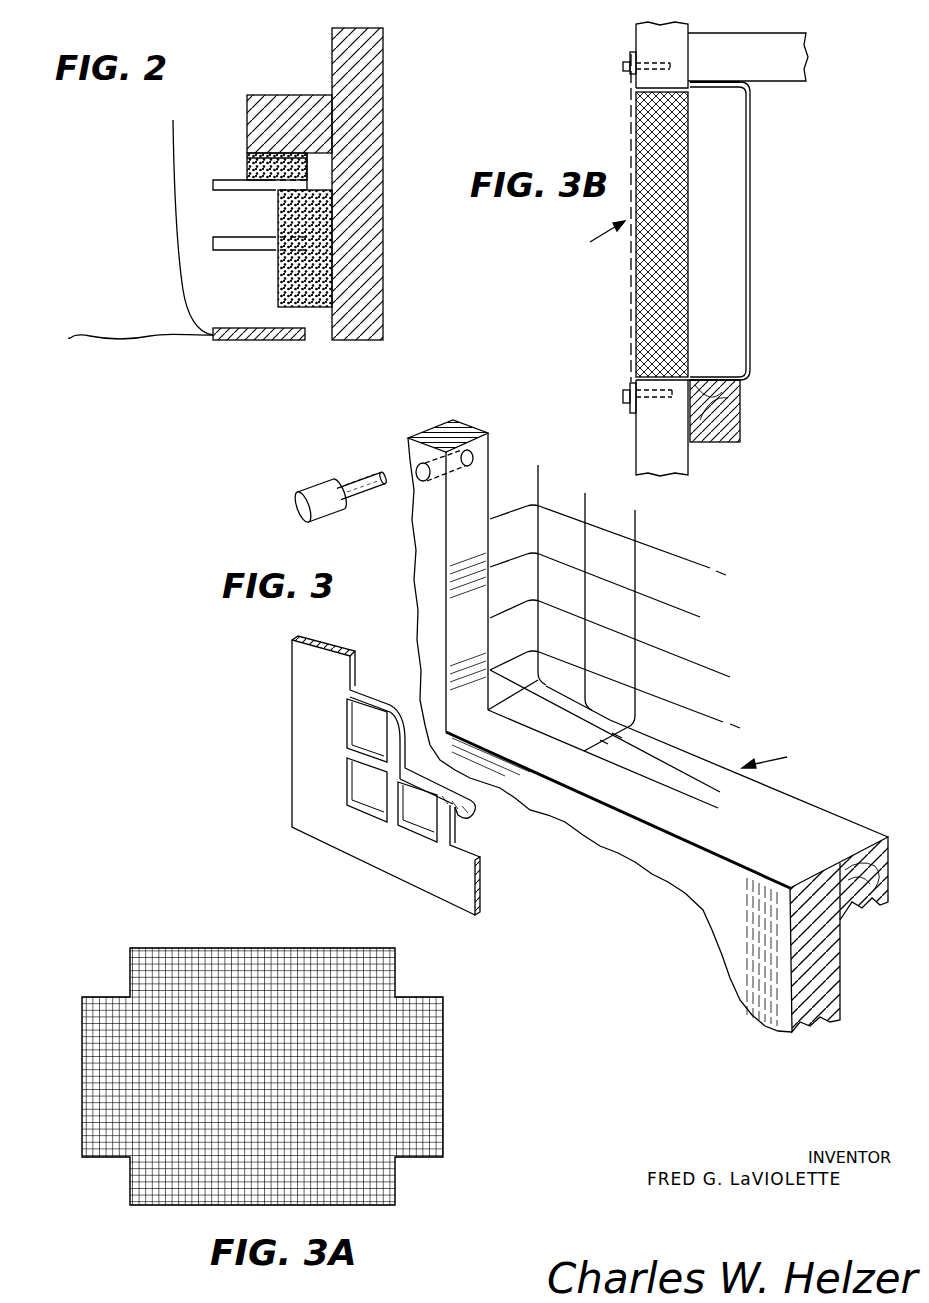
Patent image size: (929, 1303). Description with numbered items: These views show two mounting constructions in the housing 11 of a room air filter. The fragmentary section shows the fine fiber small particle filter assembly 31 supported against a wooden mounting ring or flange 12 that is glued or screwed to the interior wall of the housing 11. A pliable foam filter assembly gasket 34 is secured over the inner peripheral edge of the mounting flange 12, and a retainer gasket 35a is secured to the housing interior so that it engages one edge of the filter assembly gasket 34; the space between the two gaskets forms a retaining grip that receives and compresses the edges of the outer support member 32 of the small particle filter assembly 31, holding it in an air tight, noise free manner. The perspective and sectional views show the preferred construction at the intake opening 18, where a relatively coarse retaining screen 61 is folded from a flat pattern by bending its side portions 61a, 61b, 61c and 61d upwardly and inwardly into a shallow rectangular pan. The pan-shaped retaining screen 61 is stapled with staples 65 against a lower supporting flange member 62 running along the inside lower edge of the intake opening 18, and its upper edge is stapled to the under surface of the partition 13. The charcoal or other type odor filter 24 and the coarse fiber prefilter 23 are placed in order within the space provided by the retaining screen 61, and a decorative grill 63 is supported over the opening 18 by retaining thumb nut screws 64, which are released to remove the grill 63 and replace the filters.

In FIG. 2, the housing 11 is at (383, 97).
In FIG. 3B, the housing 11 is at (650, 38).
In FIG. 3, the housing 11 is at (428, 530).
In FIG. 2, the mounting ring or flange 12 is at (267, 108).
In FIG. 3B, the partition 13 is at (789, 56).
In FIG. 3B, the intake opening 18 is at (590, 235).
In FIG. 3, the intake opening 18 is at (778, 761).
In FIG. 3B, the coarse fiber prefilter 23 is at (659, 287).
In FIG. 3B, the charcoal or other type odor filter 24 is at (715, 233).
In FIG. 2, the small particle filter assembly 31 is at (122, 197).
In FIG. 2, the outer support member 32 is at (232, 243).
In FIG. 2, the filter assembly gasket 34 is at (249, 166).
In FIG. 2, the retainer gasket 35a is at (293, 275).
In FIG. 3B, the retaining screen 61 is at (750, 146).
In FIG. 3, the retaining screen 61 is at (635, 542).
In FIG. 3A, the retaining screen 61 is at (380, 1028).
In FIG. 3A, the side portion 61a is at (100, 1052).
In FIG. 3A, the side portion 61b is at (427, 1102).
In FIG. 3A, the side portion 61c is at (278, 963).
In FIG. 3A, the side portion 61d is at (200, 1206).
In FIG. 3B, the lower supporting flange member 62 is at (740, 429).
In FIG. 3, the lower supporting flange member 62 is at (840, 830).
In FIG. 3B, the decorative grill 63 is at (630, 150).
In FIG. 3, the decorative grill 63 is at (318, 812).
In FIG. 3B, the thumb nut screws 64 is at (623, 67).
In FIG. 3, the thumb nut screws 64 is at (325, 492).
In FIG. 3B, the staples 65 is at (715, 83).
In FIG. 3, the staples 65 is at (626, 728).